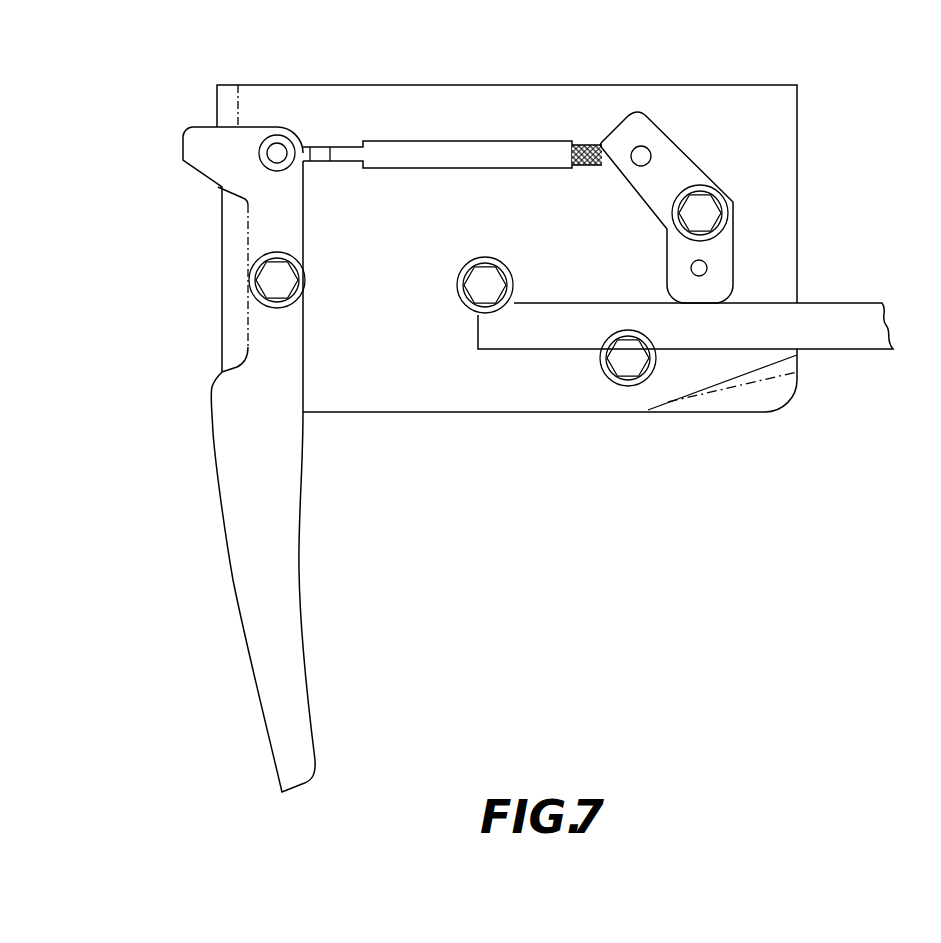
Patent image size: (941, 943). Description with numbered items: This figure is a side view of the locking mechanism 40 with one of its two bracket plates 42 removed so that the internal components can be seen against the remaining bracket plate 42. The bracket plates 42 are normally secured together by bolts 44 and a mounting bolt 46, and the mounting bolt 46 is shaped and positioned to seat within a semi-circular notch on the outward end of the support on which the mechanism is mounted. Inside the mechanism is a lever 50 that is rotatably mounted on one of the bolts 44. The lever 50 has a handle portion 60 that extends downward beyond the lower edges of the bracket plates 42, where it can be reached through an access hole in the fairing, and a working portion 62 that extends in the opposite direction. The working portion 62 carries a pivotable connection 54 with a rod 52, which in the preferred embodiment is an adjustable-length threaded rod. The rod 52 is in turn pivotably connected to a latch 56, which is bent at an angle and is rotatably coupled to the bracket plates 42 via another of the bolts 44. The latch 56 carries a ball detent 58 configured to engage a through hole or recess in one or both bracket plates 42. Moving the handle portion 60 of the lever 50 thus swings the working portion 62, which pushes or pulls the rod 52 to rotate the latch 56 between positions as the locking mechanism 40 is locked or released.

The locking mechanism 40 is at (527, 452).
The bracket plate 42 is at (797, 113).
The bolt 44 is at (252, 284).
The mounting bolt 46 is at (628, 366).
The lever 50 is at (253, 459).
The rod 52 is at (455, 140).
The pivotable connection 54 is at (277, 150).
The latch 56 is at (676, 168).
The ball detent 58 is at (712, 268).
The handle portion 60 is at (315, 745).
The working portion 62 is at (258, 218).